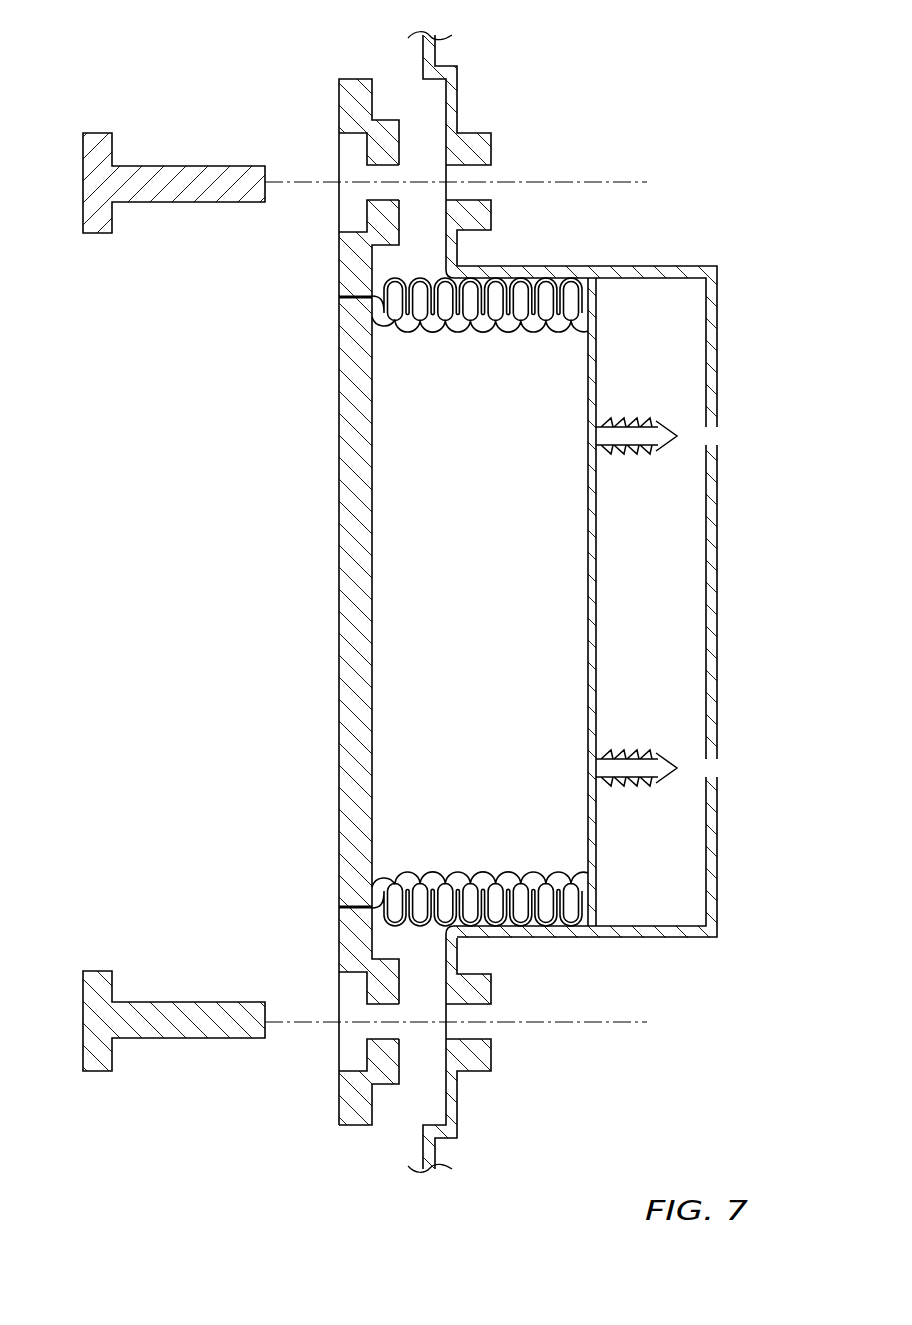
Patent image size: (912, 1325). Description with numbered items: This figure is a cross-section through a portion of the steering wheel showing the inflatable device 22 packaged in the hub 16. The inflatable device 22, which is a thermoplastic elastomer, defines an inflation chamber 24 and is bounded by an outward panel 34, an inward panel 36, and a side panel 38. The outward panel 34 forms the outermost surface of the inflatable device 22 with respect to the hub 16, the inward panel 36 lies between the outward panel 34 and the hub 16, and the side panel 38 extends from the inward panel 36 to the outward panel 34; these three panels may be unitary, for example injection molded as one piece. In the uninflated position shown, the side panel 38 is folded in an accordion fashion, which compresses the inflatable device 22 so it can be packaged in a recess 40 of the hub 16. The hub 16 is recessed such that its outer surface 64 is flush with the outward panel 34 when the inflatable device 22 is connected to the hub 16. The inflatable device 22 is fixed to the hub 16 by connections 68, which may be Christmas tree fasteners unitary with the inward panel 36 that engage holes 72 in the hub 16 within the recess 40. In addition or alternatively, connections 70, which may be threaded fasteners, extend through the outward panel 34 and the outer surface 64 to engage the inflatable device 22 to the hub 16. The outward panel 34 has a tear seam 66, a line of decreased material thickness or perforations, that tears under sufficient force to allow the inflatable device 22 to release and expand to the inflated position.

The hub 16 is at (692, 266).
The inflatable device 22 is at (292, 401).
The inflation chamber 24 is at (493, 578).
The outward panel 34 is at (339, 480).
The inward panel 36 is at (597, 637).
The side panel 38 is at (548, 283).
The recess 40 is at (685, 313).
The outer surface 64 is at (423, 53).
The tear seam 66 is at (339, 297).
The connections 68 is at (665, 425).
The connections 70 is at (193, 166).
The holes 72 is at (713, 433).